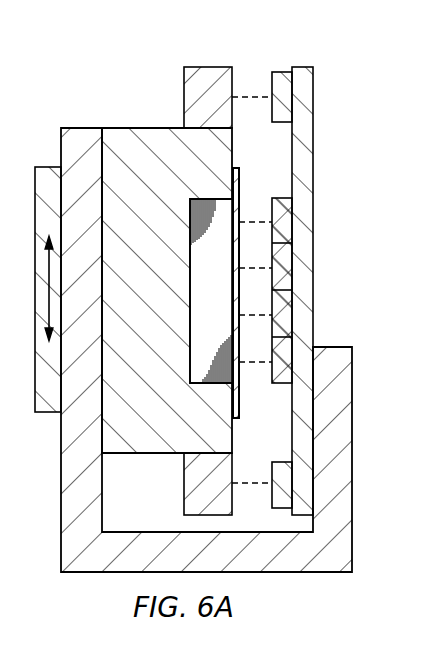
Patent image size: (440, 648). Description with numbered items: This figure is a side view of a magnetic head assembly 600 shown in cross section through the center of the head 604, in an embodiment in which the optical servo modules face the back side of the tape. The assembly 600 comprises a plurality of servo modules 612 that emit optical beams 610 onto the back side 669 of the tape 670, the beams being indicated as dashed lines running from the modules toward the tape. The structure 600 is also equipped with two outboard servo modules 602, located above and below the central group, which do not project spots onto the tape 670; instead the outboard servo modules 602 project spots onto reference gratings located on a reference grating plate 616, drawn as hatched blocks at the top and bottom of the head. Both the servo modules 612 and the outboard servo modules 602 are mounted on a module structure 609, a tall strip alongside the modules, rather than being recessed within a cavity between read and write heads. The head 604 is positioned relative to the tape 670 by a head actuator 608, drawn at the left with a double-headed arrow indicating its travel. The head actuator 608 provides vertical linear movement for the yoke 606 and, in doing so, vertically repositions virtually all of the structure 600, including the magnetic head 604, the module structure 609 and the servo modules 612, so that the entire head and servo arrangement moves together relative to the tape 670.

The assembly 600 is at (118, 57).
The outboard servo module 602 is at (277, 77).
The head 604 is at (140, 128).
The yoke 606 is at (78, 128).
The head actuator 608 is at (48, 170).
The module structure 609 is at (308, 150).
The optical beam 610 is at (255, 97).
The servo module 612 is at (285, 212).
The reference grating plate 616 is at (202, 68).
The back side 669 is at (253, 199).
The tape 670 is at (238, 177).